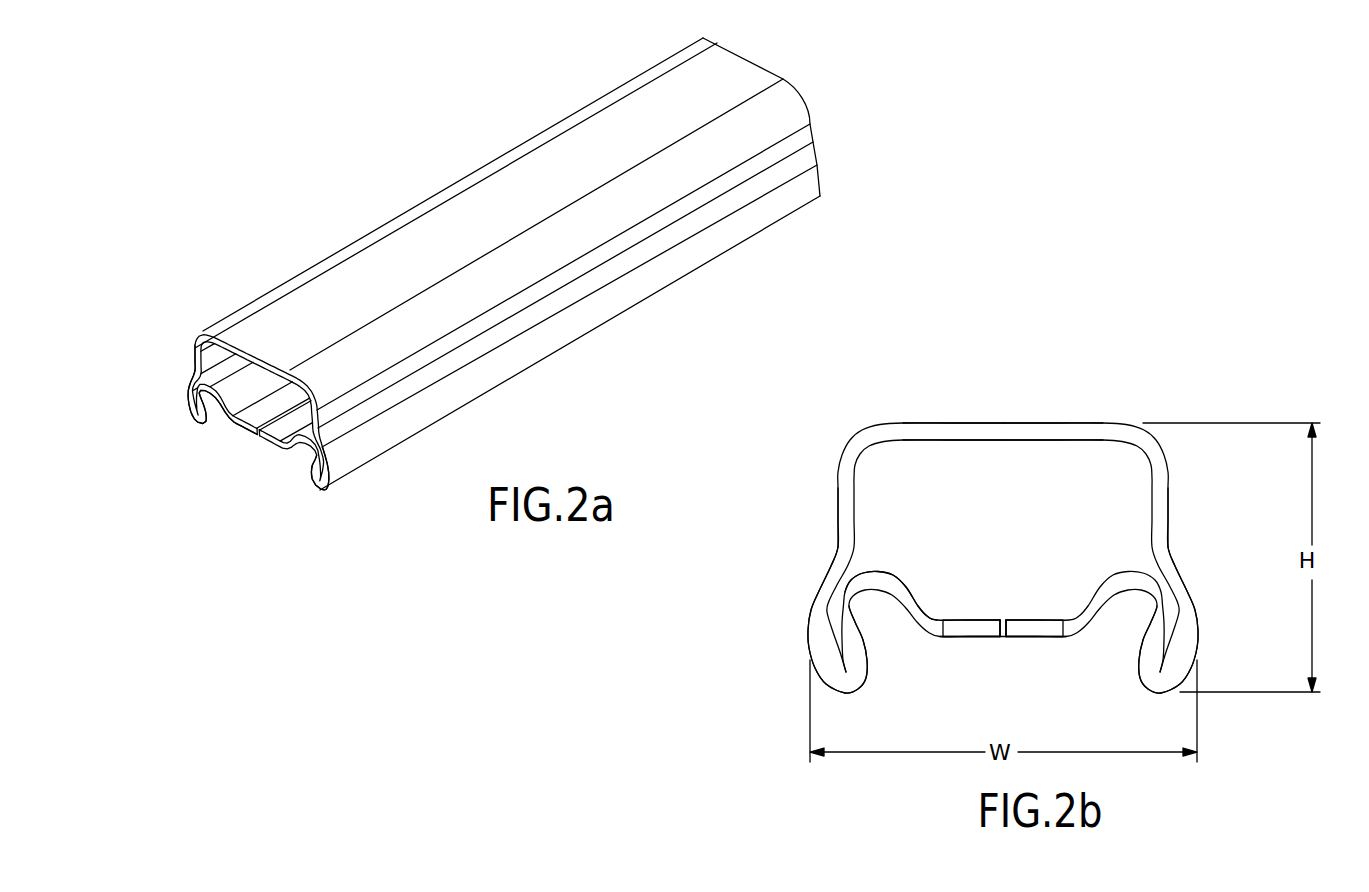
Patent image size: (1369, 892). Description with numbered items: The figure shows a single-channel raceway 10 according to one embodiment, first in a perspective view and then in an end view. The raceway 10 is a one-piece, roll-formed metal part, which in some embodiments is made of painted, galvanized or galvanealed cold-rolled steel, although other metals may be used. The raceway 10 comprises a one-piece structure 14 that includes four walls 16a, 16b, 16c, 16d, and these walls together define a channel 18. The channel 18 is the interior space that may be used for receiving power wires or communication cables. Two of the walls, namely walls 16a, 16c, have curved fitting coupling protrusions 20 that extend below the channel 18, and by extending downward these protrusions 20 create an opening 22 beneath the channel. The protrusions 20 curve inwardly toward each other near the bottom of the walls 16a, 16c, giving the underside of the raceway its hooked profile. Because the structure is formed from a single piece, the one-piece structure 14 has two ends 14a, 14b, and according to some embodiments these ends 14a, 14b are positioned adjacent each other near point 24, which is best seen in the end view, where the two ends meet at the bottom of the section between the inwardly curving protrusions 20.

In FIG. 2a, the single-channel raceway 10 is at (373, 195).
In FIG. 2b, the single-channel raceway 10 is at (1135, 400).
In FIG. 2a, the one-piece structure 14 is at (738, 83).
In FIG. 2b, the one-piece structure 14 is at (1155, 450).
In FIG. 2b, the end of the one-piece structure 14a is at (983, 632).
In FIG. 2b, the end of the one-piece structure 14b is at (1018, 640).
In FIG. 2a, the wall 16a is at (193, 364).
In FIG. 2b, the wall 16a is at (843, 517).
In FIG. 2a, the wall 16b is at (317, 298).
In FIG. 2b, the wall 16b is at (1013, 420).
In FIG. 2a, the wall 16c is at (385, 400).
In FIG. 2b, the wall 16c is at (1165, 505).
In FIG. 2a, the wall 16d is at (255, 425).
In FIG. 2b, the wall 16d is at (1050, 632).
In FIG. 2a, the channel 18 is at (240, 370).
In FIG. 2b, the channel 18 is at (967, 473).
In FIG. 2a, the curved fitting coupling protrusions 20 is at (190, 399).
In FIG. 2b, the curved fitting coupling protrusions 20 is at (812, 636).
In FIG. 2a, the opening 22 is at (230, 428).
In FIG. 2b, the opening 22 is at (908, 663).
In FIG. 2b, the point 24 is at (1001, 613).